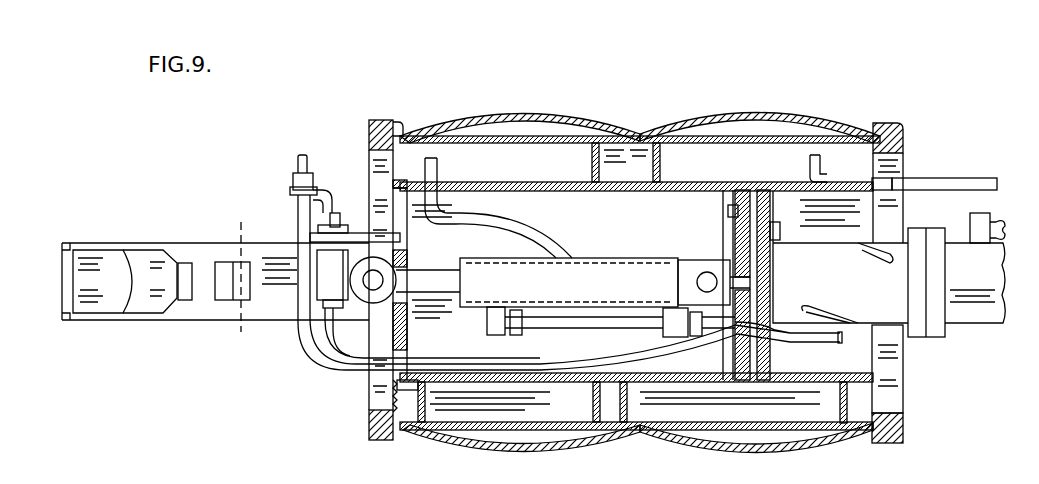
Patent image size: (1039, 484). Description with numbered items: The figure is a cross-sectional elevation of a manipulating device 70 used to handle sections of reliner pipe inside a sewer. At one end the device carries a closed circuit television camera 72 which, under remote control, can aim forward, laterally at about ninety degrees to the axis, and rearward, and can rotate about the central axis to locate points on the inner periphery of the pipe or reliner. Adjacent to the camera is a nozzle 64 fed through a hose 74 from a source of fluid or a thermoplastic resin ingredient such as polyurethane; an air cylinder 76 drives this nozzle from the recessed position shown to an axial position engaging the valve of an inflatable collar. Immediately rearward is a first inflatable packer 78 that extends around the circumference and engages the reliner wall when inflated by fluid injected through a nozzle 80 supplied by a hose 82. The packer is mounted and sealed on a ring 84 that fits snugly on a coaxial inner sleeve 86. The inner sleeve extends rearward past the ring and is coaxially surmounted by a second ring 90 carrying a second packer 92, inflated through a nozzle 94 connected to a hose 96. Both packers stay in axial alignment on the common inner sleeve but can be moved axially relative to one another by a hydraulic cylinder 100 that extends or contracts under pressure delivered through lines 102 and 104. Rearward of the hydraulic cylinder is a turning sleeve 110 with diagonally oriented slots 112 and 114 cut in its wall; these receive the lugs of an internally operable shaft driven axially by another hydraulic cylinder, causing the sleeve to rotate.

The nozzle 64 is at (295, 163).
The manipulating device 70 is at (330, 396).
The closed circuit television camera 72 is at (115, 305).
The hose 74 is at (317, 353).
The air cylinder 76 is at (325, 288).
The first inflatable packer 78 is at (497, 118).
The nozzle 80 is at (436, 172).
The hose 82 is at (543, 242).
The ring 84 is at (530, 183).
The inner sleeve 86 is at (592, 195).
The second ring 90 is at (720, 183).
The second packer 92 is at (713, 118).
The nozzle 94 is at (810, 166).
The hose 96 is at (963, 182).
The hydraulic cylinder 100 is at (625, 272).
The line 102 is at (563, 327).
The line 104 is at (797, 338).
The turning sleeve 110 is at (829, 281).
The diagonally oriented slot 112 is at (828, 315).
The diagonally oriented slot 114 is at (878, 247).